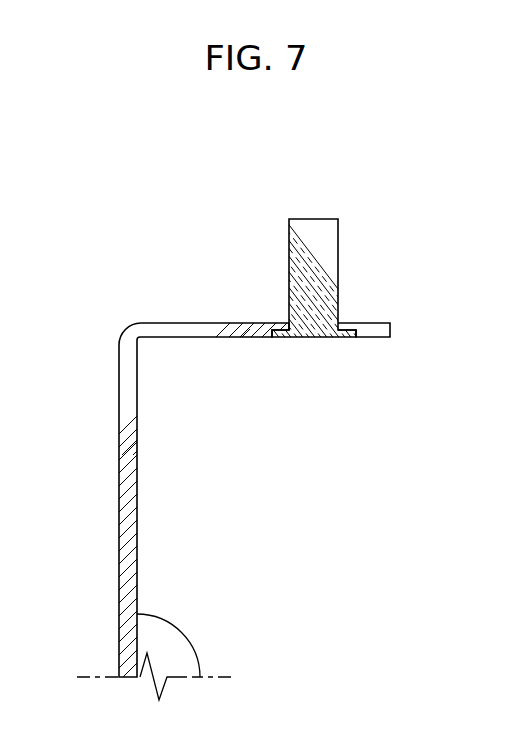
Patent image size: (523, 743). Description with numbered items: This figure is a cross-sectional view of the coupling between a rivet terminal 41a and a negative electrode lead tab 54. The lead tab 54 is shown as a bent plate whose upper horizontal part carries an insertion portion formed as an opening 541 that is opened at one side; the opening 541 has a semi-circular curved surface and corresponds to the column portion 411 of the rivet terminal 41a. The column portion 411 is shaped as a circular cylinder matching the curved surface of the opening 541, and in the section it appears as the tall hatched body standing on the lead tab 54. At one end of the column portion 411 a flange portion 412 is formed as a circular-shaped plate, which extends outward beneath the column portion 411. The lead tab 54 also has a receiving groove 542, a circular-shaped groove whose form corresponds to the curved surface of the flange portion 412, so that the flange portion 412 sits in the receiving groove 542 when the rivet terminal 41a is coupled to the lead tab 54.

The negative electrode lead tab 54 is at (118, 371).
The opening 541 is at (390, 329).
The receiving groove 542 is at (345, 338).
The rivet terminal 41a is at (289, 251).
The column portion 411 is at (305, 290).
The flange portion 412 is at (280, 338).